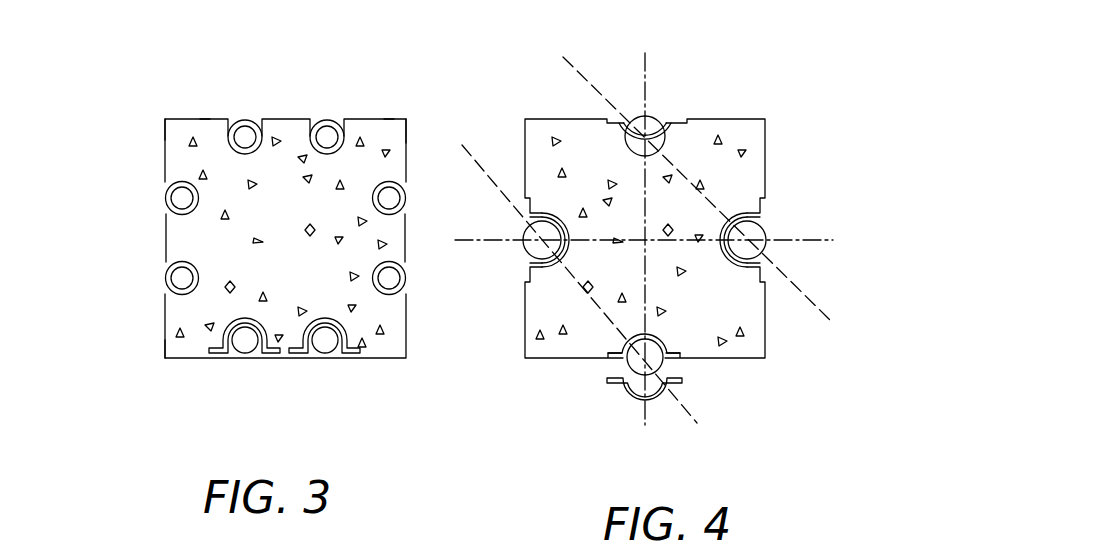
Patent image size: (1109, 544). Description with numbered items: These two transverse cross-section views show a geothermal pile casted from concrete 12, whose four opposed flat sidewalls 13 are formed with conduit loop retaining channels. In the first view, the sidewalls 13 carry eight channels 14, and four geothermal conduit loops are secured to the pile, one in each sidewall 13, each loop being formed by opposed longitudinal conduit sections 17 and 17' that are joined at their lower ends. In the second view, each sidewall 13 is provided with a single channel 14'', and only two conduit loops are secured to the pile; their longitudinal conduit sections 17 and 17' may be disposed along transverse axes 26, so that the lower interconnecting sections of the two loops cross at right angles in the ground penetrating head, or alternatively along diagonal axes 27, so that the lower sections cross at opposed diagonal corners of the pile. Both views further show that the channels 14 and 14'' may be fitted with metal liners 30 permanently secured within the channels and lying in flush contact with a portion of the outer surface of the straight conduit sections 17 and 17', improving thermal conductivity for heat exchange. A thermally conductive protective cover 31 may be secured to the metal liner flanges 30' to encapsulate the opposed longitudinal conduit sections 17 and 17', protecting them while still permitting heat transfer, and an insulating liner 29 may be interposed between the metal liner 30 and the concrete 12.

In FIG. 3, the concrete 12 is at (240, 229).
In FIG. 3, the sidewalls 13 is at (165, 140).
In FIG. 4, the sidewalls 13 is at (766, 140).
In FIG. 3, the channels 14 is at (311, 171).
In FIG. 4, the single channel 14'' is at (663, 184).
In FIG. 4, the longitudinal conduit section 17 is at (696, 145).
In FIG. 4, the opposed longitudinal conduit section 17' is at (605, 383).
In FIG. 4, the transverse axes 26 is at (643, 78).
In FIG. 4, the diagonal axes 27 is at (588, 80).
In FIG. 3, the insulating liner 29 is at (233, 322).
In FIG. 3, the metal liners 30 is at (330, 300).
In FIG. 4, the metal liners 30 is at (588, 320).
In FIG. 4, the metal liner flanges 30' is at (736, 364).
In FIG. 4, the thermally conductive protective cover 31 is at (683, 395).